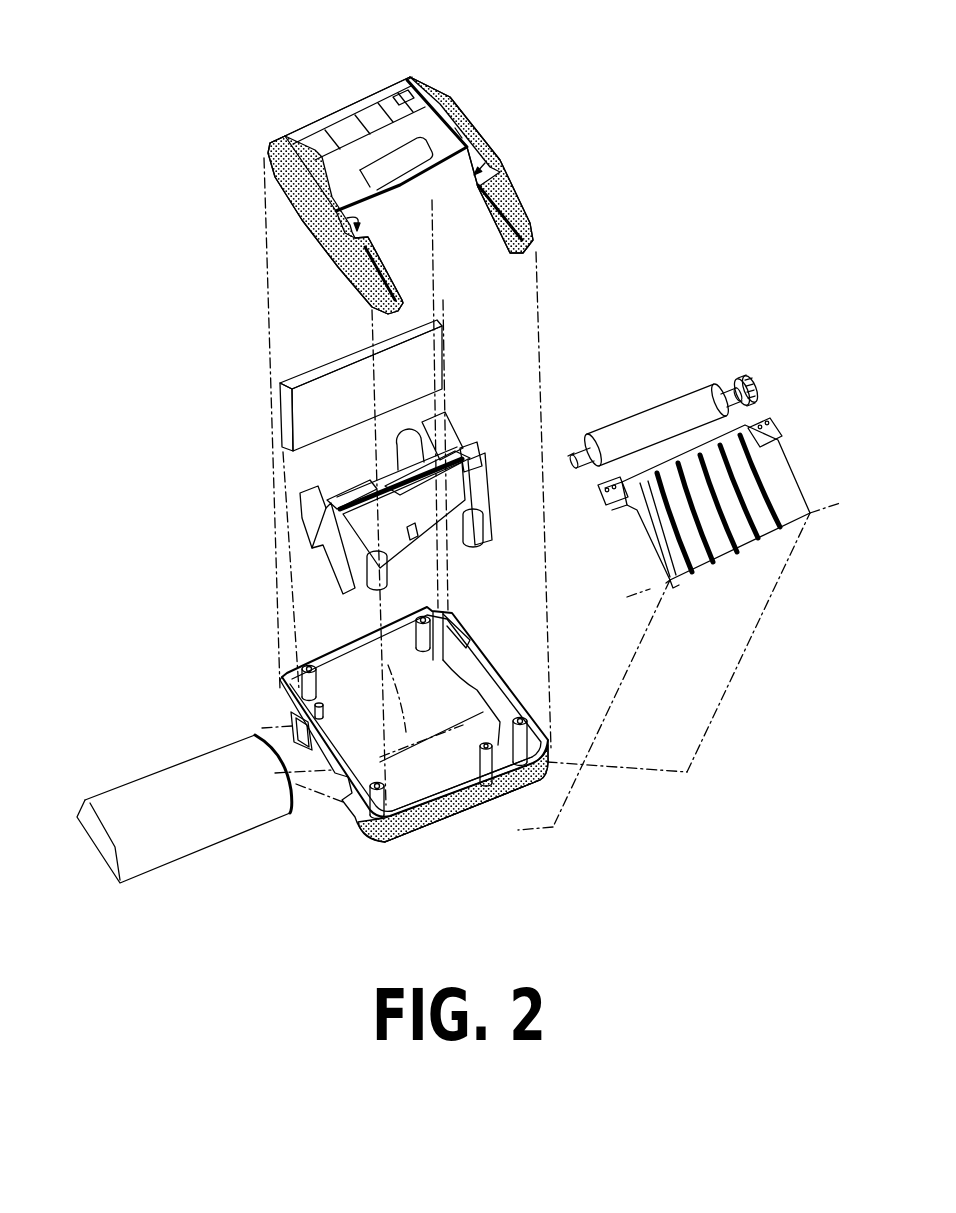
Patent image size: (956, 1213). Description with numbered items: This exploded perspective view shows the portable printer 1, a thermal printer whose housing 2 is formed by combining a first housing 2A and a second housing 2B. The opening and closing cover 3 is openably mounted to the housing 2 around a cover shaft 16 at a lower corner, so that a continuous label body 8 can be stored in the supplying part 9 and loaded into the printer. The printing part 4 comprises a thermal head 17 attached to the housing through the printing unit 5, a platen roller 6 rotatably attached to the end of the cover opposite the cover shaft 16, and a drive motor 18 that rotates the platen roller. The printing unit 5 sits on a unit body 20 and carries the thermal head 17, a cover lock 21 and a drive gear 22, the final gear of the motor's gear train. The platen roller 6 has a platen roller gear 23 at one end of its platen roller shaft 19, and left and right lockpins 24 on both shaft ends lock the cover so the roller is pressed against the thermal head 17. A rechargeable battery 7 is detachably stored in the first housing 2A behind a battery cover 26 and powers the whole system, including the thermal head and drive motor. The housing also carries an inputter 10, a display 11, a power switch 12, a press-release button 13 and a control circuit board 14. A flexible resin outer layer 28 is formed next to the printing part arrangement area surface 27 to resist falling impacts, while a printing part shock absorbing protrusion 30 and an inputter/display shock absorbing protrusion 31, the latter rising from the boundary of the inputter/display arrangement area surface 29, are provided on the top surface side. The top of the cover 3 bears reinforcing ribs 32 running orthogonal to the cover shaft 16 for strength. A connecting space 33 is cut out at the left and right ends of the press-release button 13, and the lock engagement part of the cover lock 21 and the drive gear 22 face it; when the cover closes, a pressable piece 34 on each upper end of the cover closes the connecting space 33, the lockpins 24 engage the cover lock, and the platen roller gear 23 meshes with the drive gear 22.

The portable printer 1 is at (578, 70).
The housing 2 is at (428, 58).
The first housing 2A is at (352, 813).
The second housing 2B is at (405, 78).
The opening and closing cover 3 is at (735, 547).
The printing part 4 is at (417, 497).
The printing unit 5 is at (467, 428).
The platen roller 6 is at (637, 410).
The rechargeable battery 7 is at (183, 777).
The continuous label body 8 is at (463, 810).
The supplying part 9 is at (437, 830).
The inputter 10 is at (433, 85).
The display 11 is at (363, 112).
The power switch 12 is at (348, 125).
The press-release button 13 is at (397, 170).
The control circuit board 14 is at (322, 372).
The cover shaft 16 is at (643, 590).
The thermal head 17 is at (357, 487).
The drive motor 18 is at (417, 438).
The platen roller shaft 19 is at (568, 462).
The unit body 20 is at (323, 547).
The cover lock 21 is at (472, 450).
The drive gear 22 is at (477, 467).
The platen roller gear 23 is at (742, 373).
The lockpin 24 is at (725, 380).
The battery cover 26 is at (327, 780).
The printing part arrangement area surface 27 is at (430, 125).
The outer layer 28 is at (272, 148).
The inputter/display arrangement area surface 29 is at (340, 103).
The printing part shock absorbing protrusion 30 is at (480, 137).
The inputter/display shock absorbing protrusion 31 is at (408, 77).
The reinforcing ribs 32 is at (743, 483).
The connecting space 33 is at (490, 163).
The pressable piece 34 is at (770, 427).